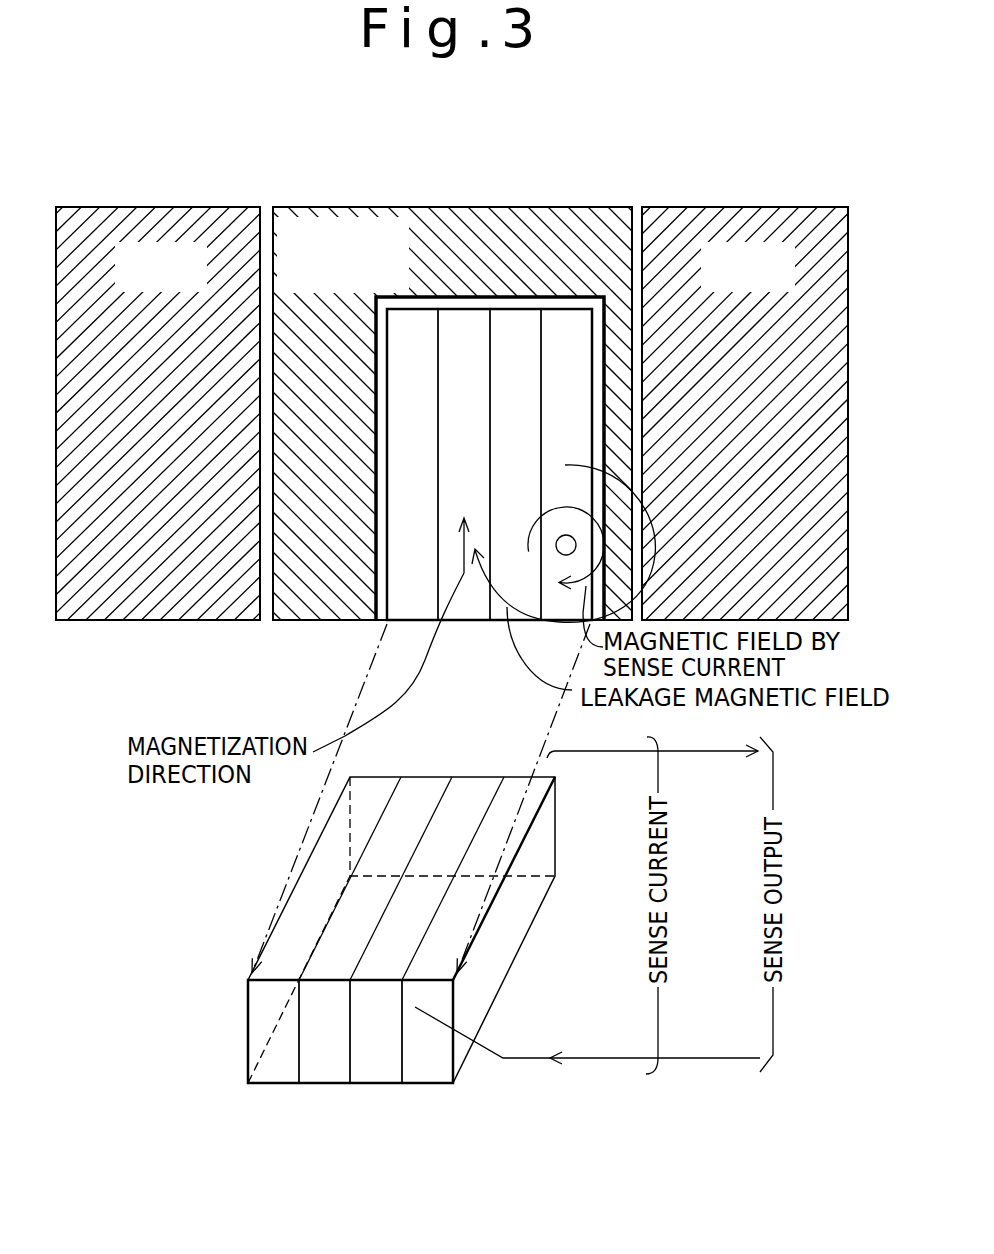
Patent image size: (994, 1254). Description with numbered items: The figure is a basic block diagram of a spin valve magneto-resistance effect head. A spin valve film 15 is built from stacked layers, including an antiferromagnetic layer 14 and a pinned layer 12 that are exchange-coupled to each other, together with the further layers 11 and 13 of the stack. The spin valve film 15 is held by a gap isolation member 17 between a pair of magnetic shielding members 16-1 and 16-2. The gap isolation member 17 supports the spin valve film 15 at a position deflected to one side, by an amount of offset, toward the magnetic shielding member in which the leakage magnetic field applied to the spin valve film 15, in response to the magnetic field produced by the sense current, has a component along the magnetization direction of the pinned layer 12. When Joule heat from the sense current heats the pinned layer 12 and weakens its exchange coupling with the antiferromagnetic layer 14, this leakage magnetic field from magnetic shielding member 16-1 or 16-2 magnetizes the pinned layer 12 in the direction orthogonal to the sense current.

The nonmagnetic layer (NML) 11 is at (525, 308).
The pinned layer 12 is at (472, 308).
The free layer (FL) 13 is at (566, 308).
The antiferromagnetic layer 14 is at (418, 308).
The spin valve film 15 is at (337, 625).
The magnetic shielding member 16-1 is at (180, 207).
The magnetic shielding member 16-2 is at (719, 207).
The gap isolation member 17 is at (376, 207).